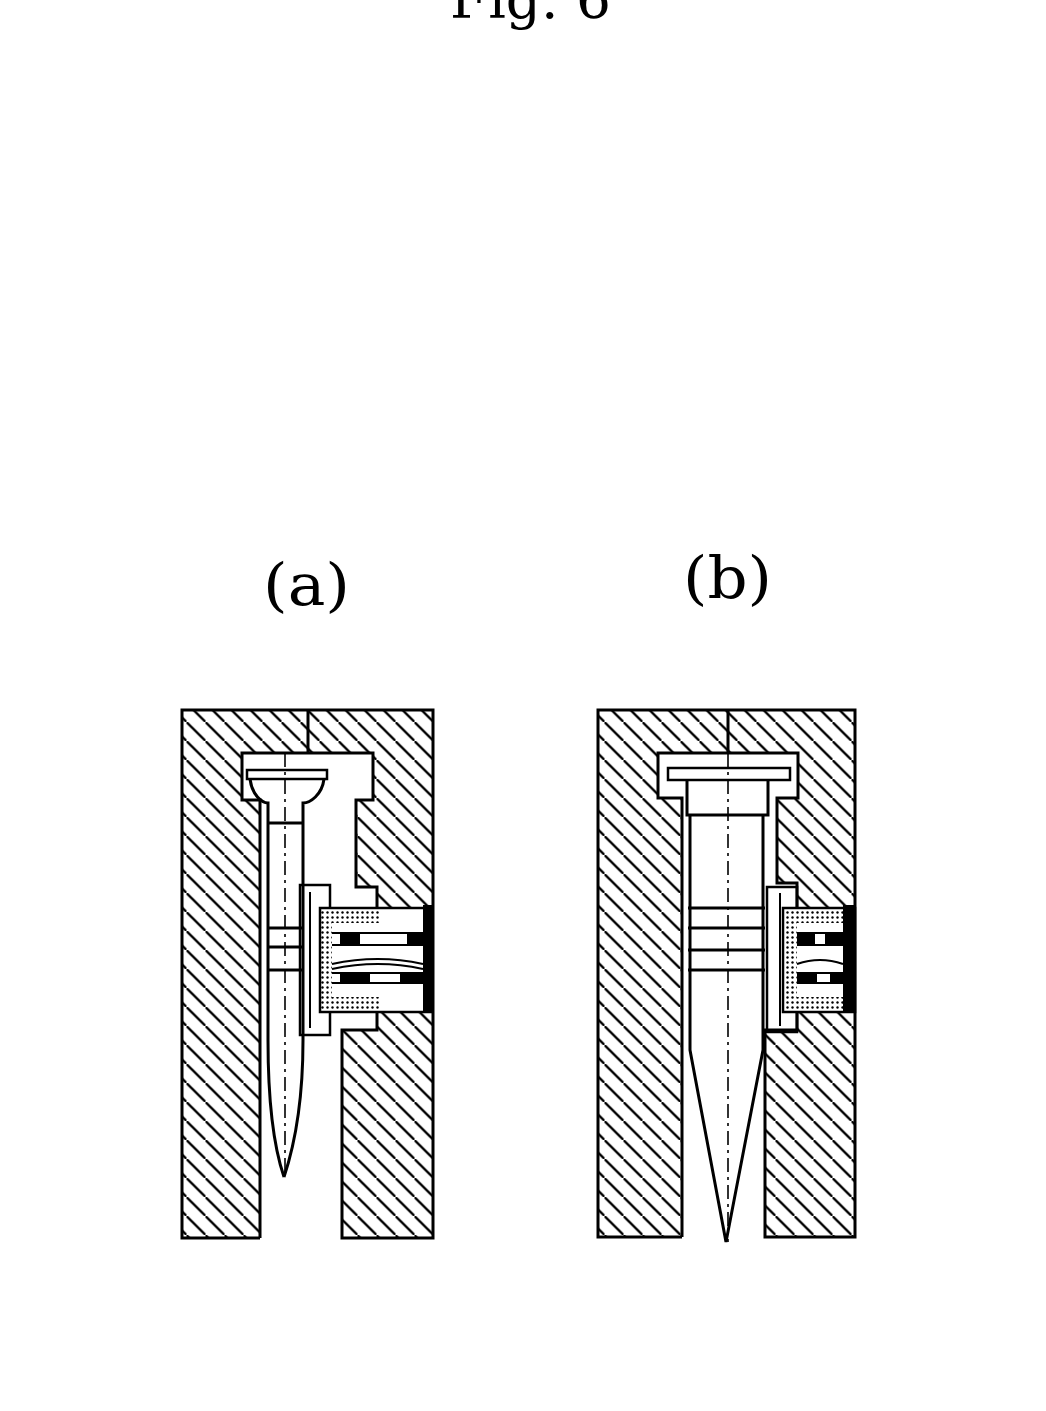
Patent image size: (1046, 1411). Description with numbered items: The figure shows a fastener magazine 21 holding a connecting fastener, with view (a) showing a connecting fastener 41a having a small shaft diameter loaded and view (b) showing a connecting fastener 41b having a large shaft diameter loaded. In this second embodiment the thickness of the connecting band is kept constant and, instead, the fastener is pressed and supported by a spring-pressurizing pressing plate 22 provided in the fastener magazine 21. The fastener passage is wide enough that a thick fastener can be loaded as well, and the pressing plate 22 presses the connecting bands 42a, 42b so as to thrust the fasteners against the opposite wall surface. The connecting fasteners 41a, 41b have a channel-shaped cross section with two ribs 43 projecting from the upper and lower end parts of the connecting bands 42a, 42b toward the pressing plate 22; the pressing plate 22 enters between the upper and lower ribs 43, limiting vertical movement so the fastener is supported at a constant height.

The fastener magazine 21 is at (171, 771).
The pressing plate 22 is at (433, 962).
The connecting fastener 41a is at (297, 1162).
The connecting fastener 41b is at (710, 1200).
The connecting band 42a is at (318, 1037).
The connecting band 42b is at (767, 1015).
The rib 43 is at (330, 886).